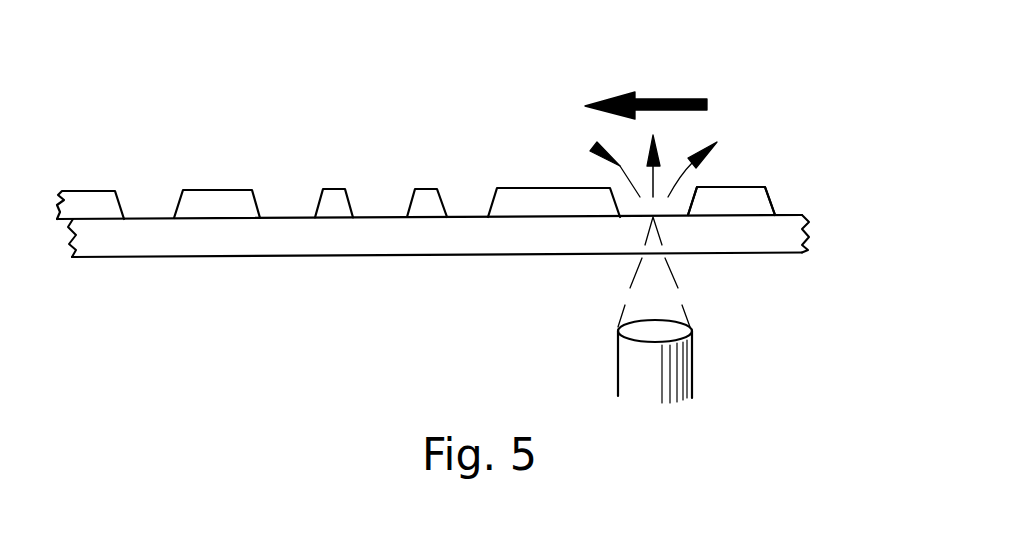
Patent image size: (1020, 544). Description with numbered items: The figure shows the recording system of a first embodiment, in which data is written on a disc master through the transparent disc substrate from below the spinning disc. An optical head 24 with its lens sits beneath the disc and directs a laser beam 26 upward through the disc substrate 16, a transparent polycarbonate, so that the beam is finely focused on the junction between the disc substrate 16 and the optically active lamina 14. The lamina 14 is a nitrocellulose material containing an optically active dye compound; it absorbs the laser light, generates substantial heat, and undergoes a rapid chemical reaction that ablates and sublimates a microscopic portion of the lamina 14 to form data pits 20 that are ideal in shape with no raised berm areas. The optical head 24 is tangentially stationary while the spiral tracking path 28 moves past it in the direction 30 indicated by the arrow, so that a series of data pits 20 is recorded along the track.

The optically active lamina 14 is at (725, 187).
The disc substrate 16 is at (258, 257).
The data pits 20 is at (150, 198).
The optical head 24 is at (662, 332).
The laser beam 26 is at (637, 275).
The spiral tracking path 28 is at (833, 215).
The direction 30 is at (672, 97).